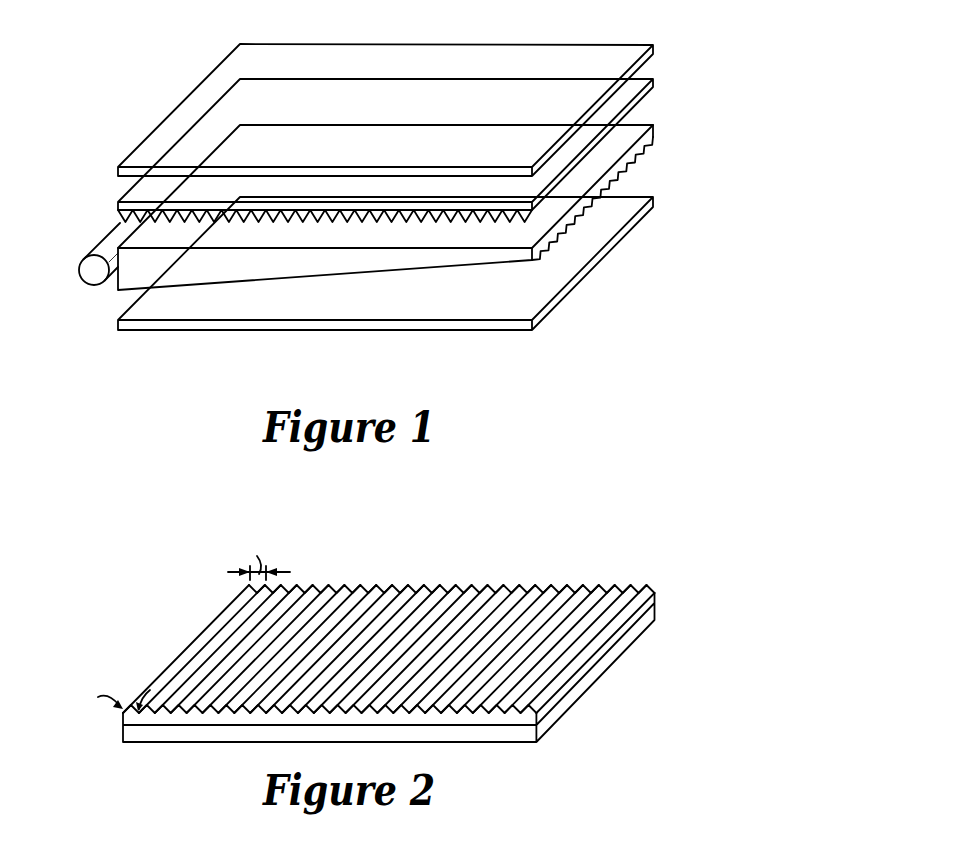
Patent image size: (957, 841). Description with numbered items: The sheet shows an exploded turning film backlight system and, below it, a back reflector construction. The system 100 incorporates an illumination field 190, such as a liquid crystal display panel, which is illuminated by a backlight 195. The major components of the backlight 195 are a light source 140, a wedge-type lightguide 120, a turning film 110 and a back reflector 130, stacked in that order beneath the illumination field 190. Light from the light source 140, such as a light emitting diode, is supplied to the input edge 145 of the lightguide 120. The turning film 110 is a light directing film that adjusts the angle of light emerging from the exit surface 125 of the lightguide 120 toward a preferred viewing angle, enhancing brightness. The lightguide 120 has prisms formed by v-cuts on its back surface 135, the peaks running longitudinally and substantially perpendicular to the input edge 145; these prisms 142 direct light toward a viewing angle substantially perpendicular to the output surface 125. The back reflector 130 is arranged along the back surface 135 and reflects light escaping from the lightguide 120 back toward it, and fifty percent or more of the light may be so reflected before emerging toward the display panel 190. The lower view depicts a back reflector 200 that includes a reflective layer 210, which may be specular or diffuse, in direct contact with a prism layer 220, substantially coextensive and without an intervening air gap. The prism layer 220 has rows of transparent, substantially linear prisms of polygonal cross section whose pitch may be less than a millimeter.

In FIG. 1, the system 100 is at (226, 51).
In FIG. 1, the turning film 110 is at (132, 192).
In FIG. 1, the wedge-type lightguide 120 is at (200, 267).
In FIG. 1, the exit surface 125 is at (330, 237).
In FIG. 1, the back reflector 130 is at (553, 302).
In FIG. 1, the back surface 135 is at (433, 273).
In FIG. 1, the light source 140 is at (80, 270).
In FIG. 1, the prismatic structures 142 is at (603, 178).
In FIG. 1, the input edge 145 is at (112, 280).
In FIG. 1, the illumination field 190 is at (610, 53).
In FIG. 1, the backlight 195 is at (664, 76).
In FIG. 2, the back reflector 200 is at (158, 620).
In FIG. 2, the reflective layer 210 is at (141, 731).
In FIG. 2, the prism layer 220 is at (186, 658).